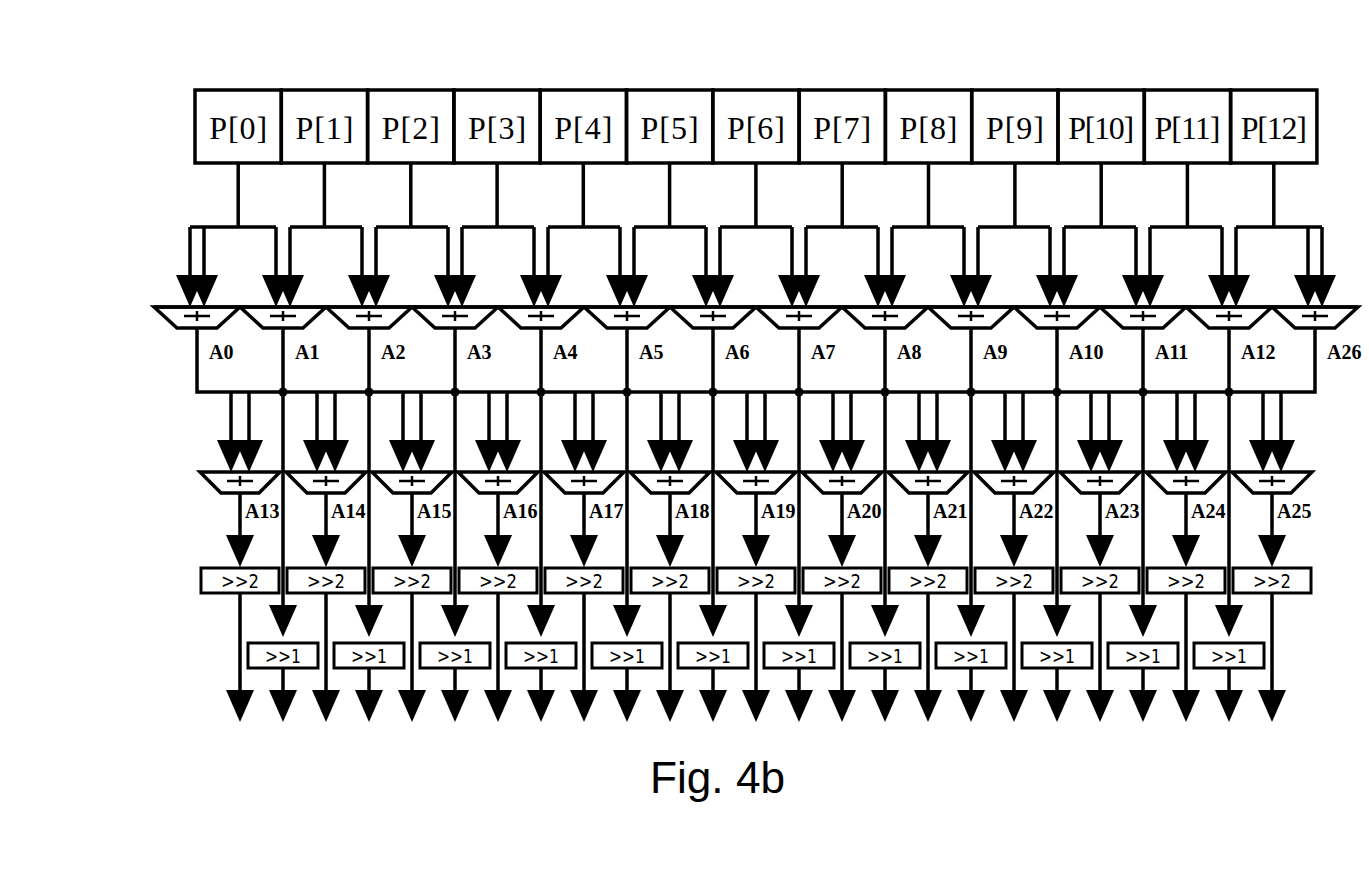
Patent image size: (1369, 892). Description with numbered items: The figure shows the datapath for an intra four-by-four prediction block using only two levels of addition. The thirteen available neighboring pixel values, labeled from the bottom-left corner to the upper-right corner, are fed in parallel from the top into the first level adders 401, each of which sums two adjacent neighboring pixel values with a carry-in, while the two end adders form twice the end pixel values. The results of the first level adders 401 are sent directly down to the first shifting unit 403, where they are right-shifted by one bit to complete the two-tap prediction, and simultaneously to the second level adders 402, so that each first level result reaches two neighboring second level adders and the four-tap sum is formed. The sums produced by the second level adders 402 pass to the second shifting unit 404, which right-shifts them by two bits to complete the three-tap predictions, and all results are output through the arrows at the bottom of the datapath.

The first level adders 401 is at (156, 309).
The second level adders 402 is at (169, 475).
The second shifting unit 404 is at (173, 574).
The first shifting unit 403 is at (201, 654).